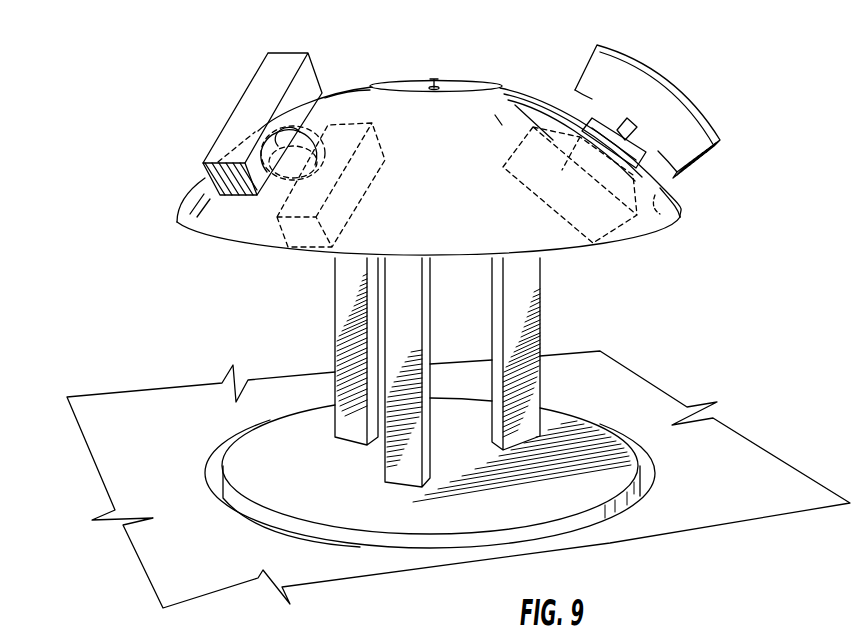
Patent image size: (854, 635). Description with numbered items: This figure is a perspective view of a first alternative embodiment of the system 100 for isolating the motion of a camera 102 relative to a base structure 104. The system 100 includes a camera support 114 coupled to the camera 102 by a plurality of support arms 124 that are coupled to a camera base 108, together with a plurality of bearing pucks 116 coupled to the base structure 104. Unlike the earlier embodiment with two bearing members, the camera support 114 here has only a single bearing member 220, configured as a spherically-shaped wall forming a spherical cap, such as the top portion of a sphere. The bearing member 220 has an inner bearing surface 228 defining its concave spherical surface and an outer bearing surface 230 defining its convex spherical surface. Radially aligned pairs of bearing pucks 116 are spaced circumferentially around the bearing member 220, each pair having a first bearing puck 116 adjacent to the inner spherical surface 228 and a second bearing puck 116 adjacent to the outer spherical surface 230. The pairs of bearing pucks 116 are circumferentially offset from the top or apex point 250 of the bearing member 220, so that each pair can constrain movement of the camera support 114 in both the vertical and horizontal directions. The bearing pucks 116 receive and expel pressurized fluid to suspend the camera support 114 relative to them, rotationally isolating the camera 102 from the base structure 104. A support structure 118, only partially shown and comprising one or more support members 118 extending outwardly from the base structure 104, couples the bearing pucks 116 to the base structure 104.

The system 100 is at (138, 96).
The camera 102 is at (416, 540).
The base structure 104 is at (144, 402).
The camera base 108 is at (390, 513).
The camera support 114 is at (410, 372).
The bearing pucks 116 is at (348, 135).
The support structure 118 is at (215, 133).
The support arms 124 is at (395, 373).
The bearing member 220 is at (172, 203).
The inner bearing surface 228 is at (658, 212).
The outer bearing surface 230 is at (667, 203).
The apex point 250 is at (440, 83).